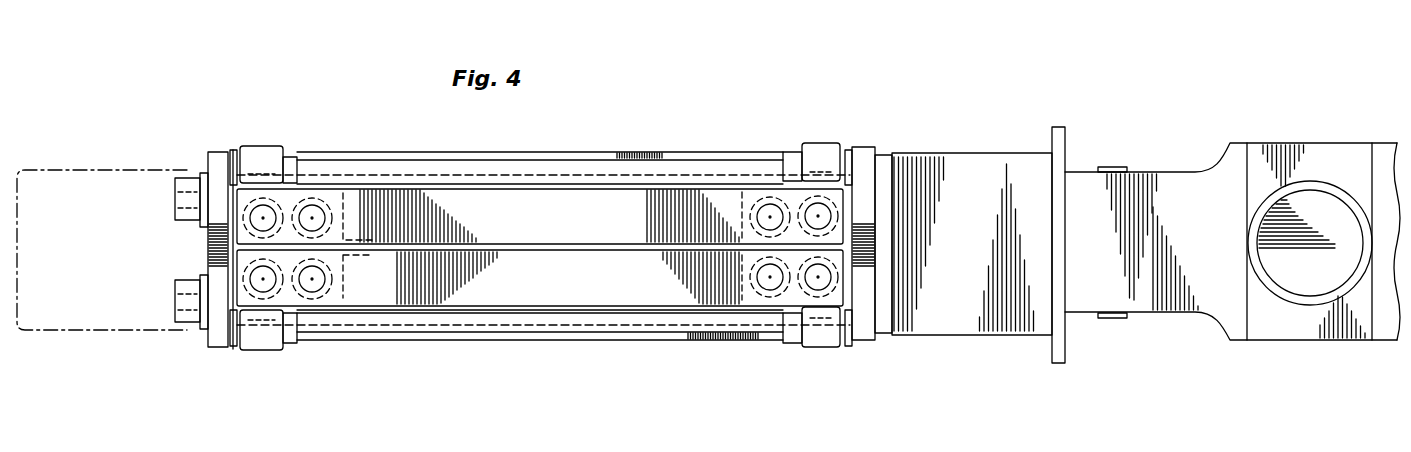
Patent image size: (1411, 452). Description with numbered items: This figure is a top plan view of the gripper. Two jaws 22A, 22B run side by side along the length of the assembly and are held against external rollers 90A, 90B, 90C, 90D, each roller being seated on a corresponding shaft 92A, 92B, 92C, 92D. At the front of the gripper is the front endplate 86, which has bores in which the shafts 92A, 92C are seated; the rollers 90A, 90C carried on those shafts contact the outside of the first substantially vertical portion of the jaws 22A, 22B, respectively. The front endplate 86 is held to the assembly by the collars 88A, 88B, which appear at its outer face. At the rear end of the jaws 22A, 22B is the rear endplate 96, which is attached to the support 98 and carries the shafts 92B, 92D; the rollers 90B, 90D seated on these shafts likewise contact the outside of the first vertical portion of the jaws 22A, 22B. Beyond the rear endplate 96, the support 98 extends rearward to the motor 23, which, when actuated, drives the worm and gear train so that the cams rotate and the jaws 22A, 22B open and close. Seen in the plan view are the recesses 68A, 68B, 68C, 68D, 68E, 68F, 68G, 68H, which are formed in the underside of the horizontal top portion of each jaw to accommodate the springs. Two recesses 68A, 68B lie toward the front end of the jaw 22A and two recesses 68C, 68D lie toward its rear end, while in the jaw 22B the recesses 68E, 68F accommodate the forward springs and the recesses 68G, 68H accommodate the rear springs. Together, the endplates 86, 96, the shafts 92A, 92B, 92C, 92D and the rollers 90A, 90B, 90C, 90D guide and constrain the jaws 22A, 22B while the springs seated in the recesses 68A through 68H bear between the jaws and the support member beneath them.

The jaw 22A is at (587, 152).
The jaw 22B is at (613, 338).
The motor 23 is at (1315, 202).
The recess 68A is at (282, 200).
The recess 68B is at (320, 201).
The recess 68C is at (752, 205).
The recess 68D is at (803, 203).
The recess 68E is at (270, 300).
The recess 68F is at (330, 293).
The recess 68G is at (770, 298).
The recess 68H is at (818, 298).
The front endplate 86 is at (216, 158).
The collar 88A is at (184, 180).
The collar 88B is at (184, 325).
The external roller 90A is at (248, 146).
The external roller 90B is at (812, 145).
The external roller 90C is at (250, 352).
The external roller 90D is at (828, 348).
The shaft 92A is at (233, 150).
The shaft 92B is at (848, 152).
The shaft 92C is at (233, 346).
The shaft 92D is at (848, 343).
The rear endplate 96 is at (862, 148).
The support 98 is at (1142, 170).